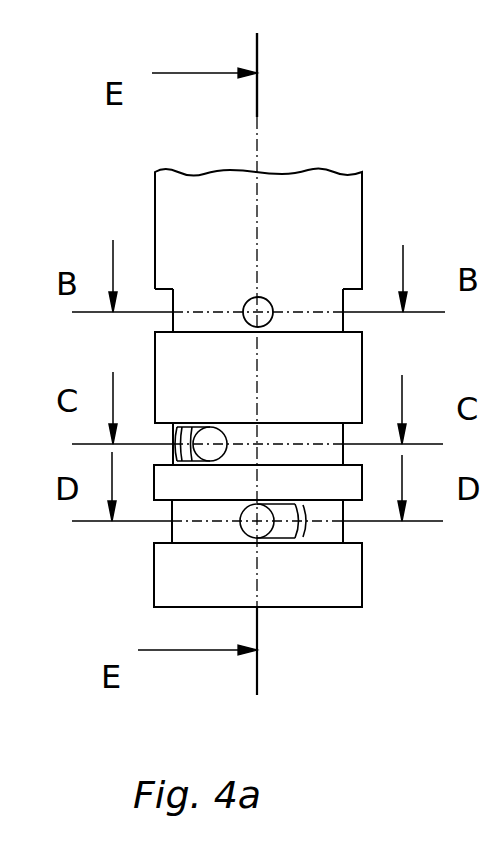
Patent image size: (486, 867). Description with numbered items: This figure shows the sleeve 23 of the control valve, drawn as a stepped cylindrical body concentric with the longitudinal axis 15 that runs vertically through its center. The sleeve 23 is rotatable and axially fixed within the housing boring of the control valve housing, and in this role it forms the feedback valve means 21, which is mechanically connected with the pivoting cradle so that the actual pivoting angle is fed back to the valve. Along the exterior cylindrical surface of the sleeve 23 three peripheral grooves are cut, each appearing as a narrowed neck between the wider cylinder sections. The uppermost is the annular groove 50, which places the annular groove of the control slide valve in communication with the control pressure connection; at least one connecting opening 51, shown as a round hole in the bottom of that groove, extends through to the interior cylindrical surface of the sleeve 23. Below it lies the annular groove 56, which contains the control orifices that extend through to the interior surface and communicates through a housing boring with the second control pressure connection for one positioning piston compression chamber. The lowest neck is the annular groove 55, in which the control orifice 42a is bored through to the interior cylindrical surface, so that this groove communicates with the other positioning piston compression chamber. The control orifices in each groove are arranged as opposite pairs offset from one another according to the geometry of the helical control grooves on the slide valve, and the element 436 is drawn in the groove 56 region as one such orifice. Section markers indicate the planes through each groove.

The longitudinal axis 15 is at (250, 132).
The feedback valve means 21 is at (347, 176).
The sleeve 23 is at (258, 377).
The annular groove 50 is at (165, 320).
The connecting opening 51 is at (286, 296).
The annular groove 55 is at (356, 532).
The annular groove 56 is at (352, 440).
The roller 436 is at (236, 436).
The control orifice 42a is at (315, 525).